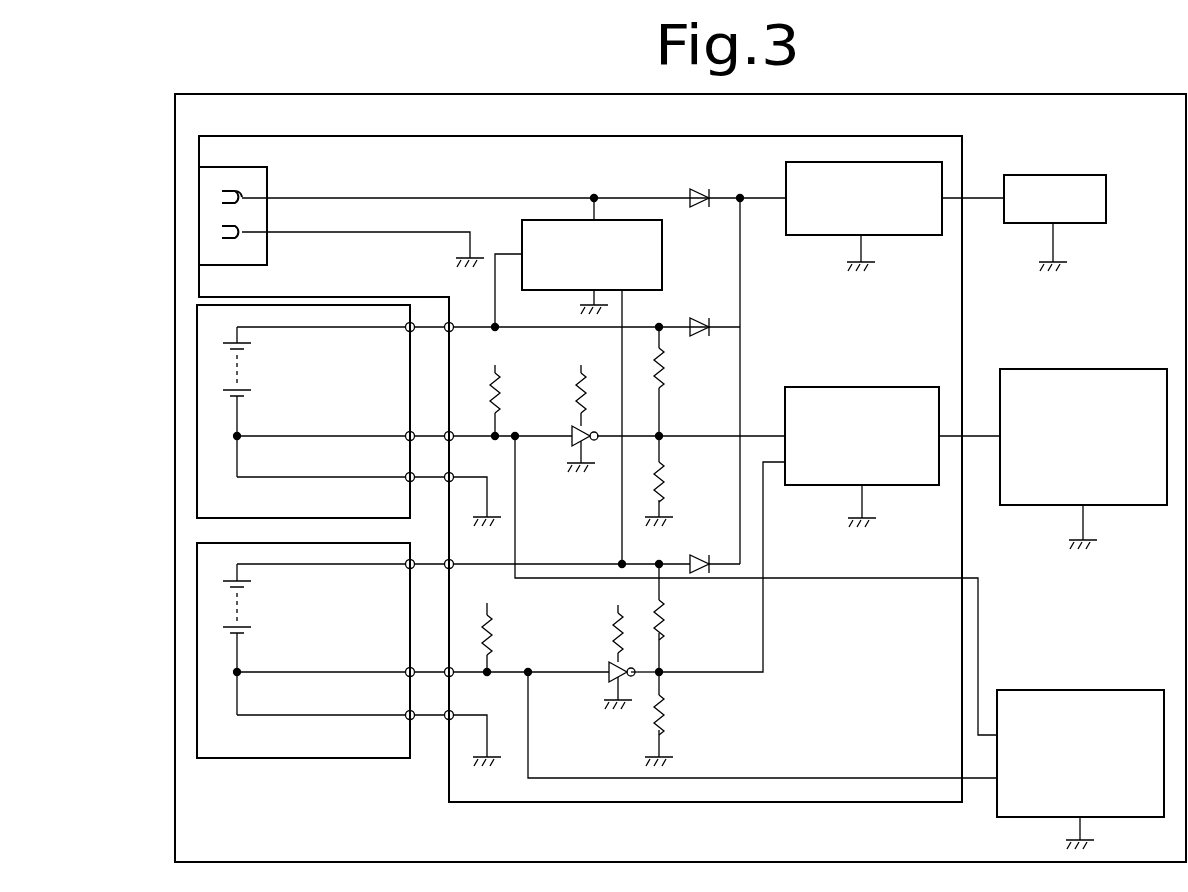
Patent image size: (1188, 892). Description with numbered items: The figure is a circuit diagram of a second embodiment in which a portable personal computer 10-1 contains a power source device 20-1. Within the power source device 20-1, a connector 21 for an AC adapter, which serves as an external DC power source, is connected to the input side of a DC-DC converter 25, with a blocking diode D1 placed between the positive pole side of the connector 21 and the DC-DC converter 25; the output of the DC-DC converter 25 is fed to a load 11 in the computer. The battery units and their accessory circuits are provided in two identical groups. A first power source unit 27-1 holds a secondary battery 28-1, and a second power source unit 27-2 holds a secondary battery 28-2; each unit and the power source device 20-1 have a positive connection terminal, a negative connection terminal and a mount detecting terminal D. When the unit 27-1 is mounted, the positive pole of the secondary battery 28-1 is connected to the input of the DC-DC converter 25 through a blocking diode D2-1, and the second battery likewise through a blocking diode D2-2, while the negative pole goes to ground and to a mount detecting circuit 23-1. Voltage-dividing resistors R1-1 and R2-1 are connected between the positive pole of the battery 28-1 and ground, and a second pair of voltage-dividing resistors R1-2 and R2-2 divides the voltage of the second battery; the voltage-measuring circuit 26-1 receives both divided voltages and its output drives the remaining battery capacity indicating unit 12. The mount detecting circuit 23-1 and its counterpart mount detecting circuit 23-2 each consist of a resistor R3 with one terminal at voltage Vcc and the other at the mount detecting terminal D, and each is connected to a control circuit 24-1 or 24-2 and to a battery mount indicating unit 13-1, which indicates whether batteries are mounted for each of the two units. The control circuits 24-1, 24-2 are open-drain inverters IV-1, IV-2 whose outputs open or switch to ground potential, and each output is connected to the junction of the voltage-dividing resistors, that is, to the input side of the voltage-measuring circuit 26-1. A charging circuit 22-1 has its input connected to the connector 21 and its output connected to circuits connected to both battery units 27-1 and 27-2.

The portable personal computer 10-1 is at (176, 159).
The power source device 20-1 is at (950, 136).
The connector 21 is at (218, 167).
The charging circuit 22-1 is at (662, 254).
The mount detecting circuit 23-1 is at (520, 493).
The mount detecting circuit 23-2 is at (488, 668).
The control circuit 24-1 is at (576, 454).
The control circuit 24-2 is at (614, 682).
The DC-DC converter 25 is at (903, 235).
The voltage-measuring circuit 26-1 is at (897, 387).
The power source unit 27-1 is at (277, 408).
The power source unit 27-2 is at (277, 645).
The secondary battery 28-1 is at (246, 372).
The secondary battery 28-2 is at (246, 607).
The load 11 is at (1108, 200).
The remaining battery capacity indicating unit 12 is at (1132, 369).
The battery mount indicating unit 13-1 is at (1100, 690).
The blocking diode D1 is at (714, 185).
The blocking diode D2-1 is at (690, 324).
The blocking diode D2-2 is at (709, 549).
The voltage-dividing resistor R1-1 is at (692, 368).
The voltage-dividing resistor R2-1 is at (692, 482).
The voltage-dividing resistor R1-2 is at (692, 620).
The voltage-dividing resistor R2-2 is at (696, 715).
The resistor R3 is at (488, 431).
The inverter IV-1 is at (587, 487).
The inverter IV-2 is at (616, 718).